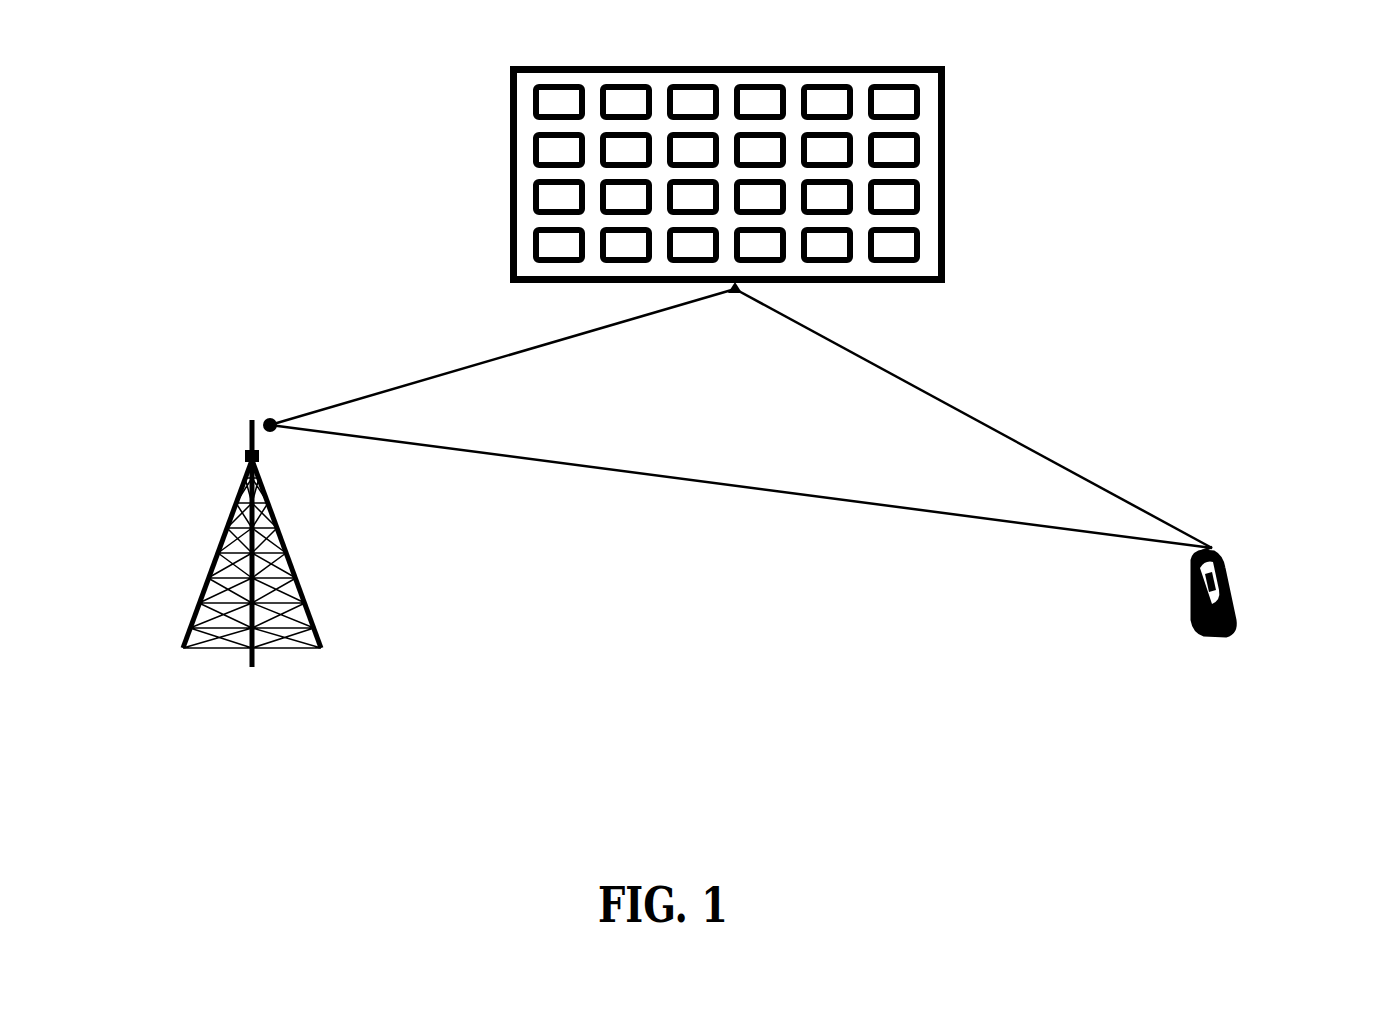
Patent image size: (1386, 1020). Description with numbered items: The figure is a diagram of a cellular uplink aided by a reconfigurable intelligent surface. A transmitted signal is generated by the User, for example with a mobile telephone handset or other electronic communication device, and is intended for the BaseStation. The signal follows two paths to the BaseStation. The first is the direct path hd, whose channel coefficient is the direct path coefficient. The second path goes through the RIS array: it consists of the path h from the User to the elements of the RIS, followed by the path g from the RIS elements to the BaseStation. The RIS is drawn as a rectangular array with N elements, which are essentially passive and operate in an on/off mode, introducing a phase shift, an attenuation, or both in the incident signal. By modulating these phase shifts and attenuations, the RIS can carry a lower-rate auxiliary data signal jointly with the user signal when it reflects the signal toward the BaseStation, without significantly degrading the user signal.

The reconfigurable intelligent surface array RIS is at (617, 150).
The base station BaseStation is at (191, 549).
The user User is at (1266, 587).
The path g is at (502, 357).
The path h is at (973, 418).
The direct path hd is at (741, 498).